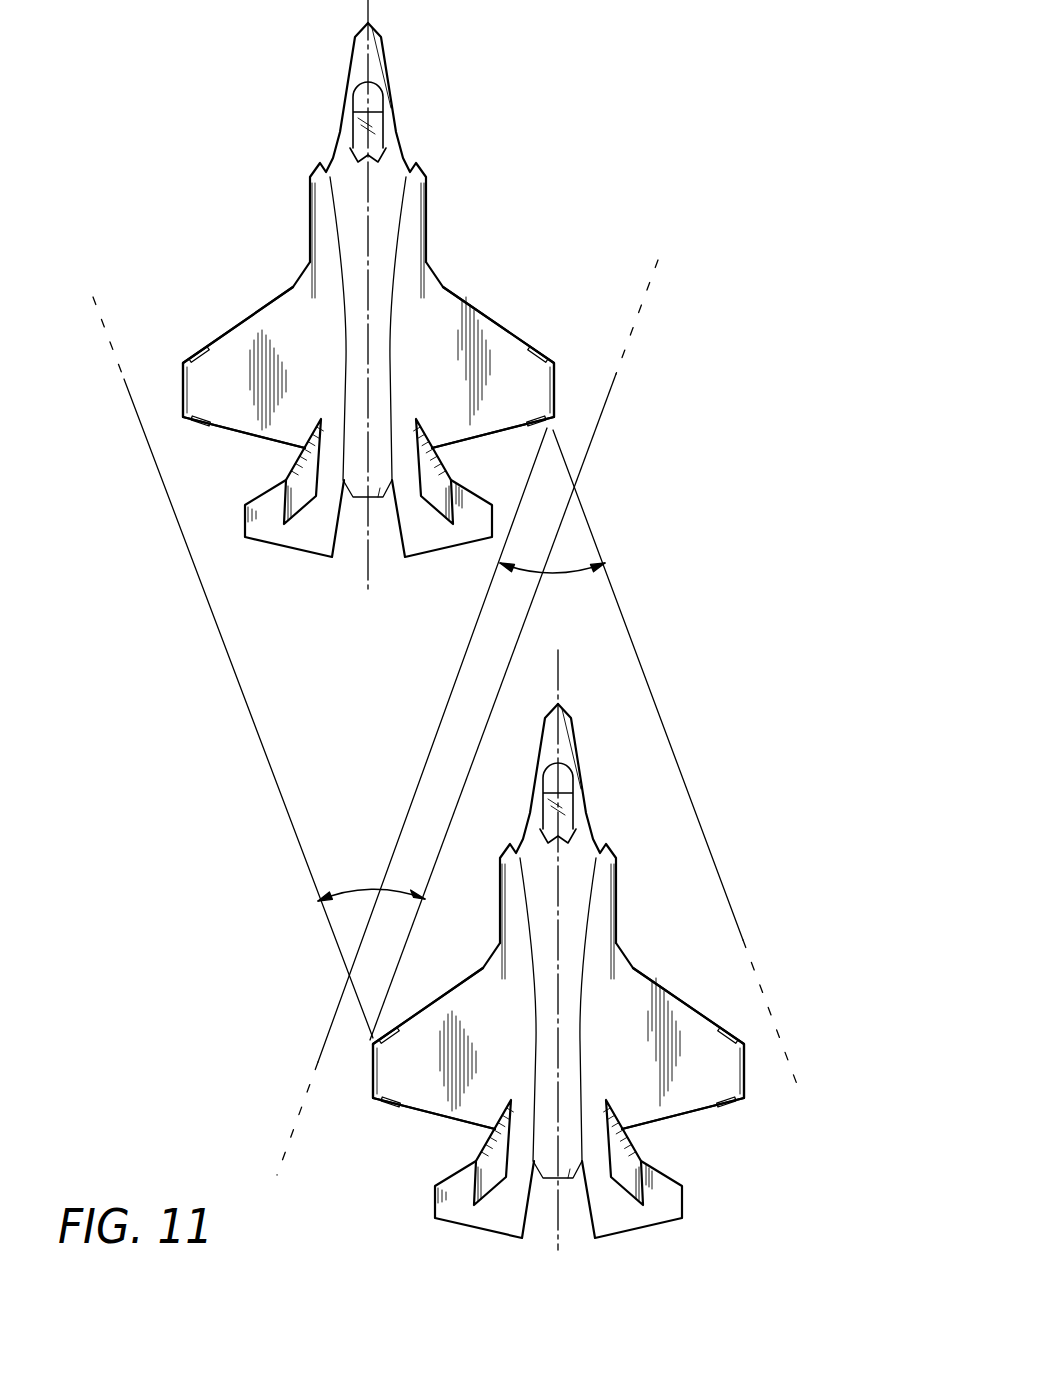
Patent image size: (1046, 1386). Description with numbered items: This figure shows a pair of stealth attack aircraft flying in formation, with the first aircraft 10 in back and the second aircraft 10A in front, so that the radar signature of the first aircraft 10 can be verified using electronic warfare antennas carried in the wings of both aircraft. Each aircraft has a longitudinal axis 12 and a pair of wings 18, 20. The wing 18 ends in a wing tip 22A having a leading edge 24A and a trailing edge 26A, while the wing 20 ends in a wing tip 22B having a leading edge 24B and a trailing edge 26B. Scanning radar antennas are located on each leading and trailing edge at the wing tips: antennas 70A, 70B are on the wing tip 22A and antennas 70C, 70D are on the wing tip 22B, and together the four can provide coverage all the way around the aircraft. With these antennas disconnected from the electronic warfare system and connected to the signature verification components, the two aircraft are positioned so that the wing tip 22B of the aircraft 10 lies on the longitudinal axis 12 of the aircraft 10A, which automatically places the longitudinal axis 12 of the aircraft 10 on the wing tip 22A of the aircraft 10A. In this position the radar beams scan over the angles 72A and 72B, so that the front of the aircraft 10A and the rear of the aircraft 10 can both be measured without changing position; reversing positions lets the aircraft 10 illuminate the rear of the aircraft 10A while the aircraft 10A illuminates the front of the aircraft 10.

The aircraft 10 is at (386, 100).
The aircraft 10A is at (593, 793).
The longitudinal axis 12 is at (366, 1).
The wing 18 is at (242, 399).
The wing 20 is at (524, 399).
The wing tip 22A is at (183, 392).
The wing tip 22B is at (556, 392).
The leading edge 24A is at (251, 313).
The leading edge 24B is at (488, 312).
The trailing edge 26A is at (263, 443).
The trailing edge 26B is at (467, 444).
The antenna 70A is at (197, 352).
The antenna 70B is at (197, 420).
The antenna 70C is at (538, 356).
The antenna 70D is at (546, 433).
The angle 72A is at (558, 574).
The angle 72B is at (371, 889).